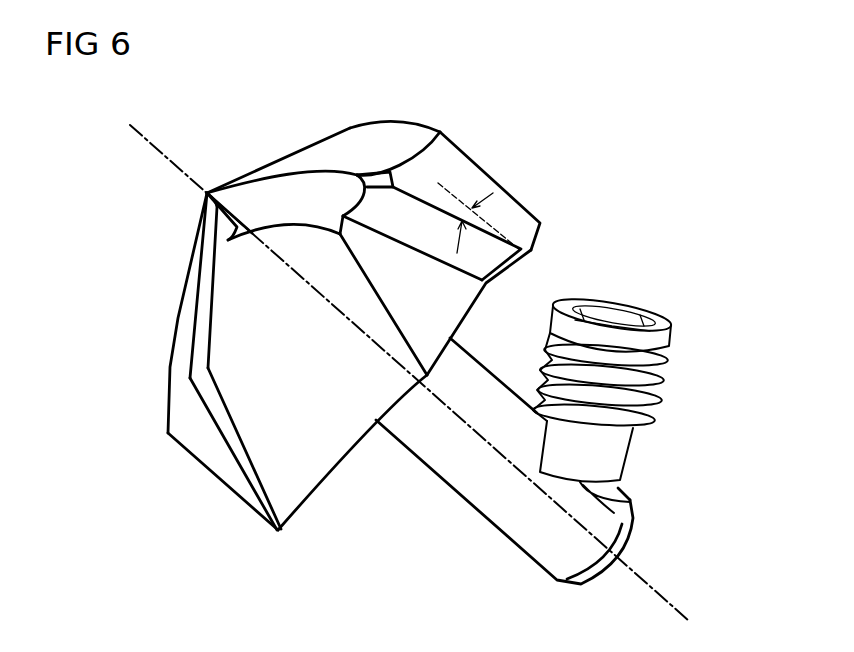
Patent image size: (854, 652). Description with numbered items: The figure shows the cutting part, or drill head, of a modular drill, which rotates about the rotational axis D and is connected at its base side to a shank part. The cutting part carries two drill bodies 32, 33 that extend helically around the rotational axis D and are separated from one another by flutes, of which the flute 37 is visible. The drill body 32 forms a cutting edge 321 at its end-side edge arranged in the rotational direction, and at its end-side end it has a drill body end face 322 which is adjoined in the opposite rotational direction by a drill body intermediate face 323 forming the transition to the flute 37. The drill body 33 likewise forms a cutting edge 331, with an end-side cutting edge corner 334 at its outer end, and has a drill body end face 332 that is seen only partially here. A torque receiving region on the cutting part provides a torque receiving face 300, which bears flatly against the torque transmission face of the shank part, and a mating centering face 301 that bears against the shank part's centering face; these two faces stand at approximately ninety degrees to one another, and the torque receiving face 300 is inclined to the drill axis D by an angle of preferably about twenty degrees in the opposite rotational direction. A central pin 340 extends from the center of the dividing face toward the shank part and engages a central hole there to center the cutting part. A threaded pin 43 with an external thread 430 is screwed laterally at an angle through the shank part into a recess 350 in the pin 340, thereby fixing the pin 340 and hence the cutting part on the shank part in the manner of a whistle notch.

The cutting edge 321 is at (310, 150).
The drill body end face 322 is at (367, 147).
The drill body intermediate face 323 is at (275, 200).
The mating centering face 301 is at (397, 270).
The torque receiving face 300 is at (470, 170).
The drill body 32 is at (478, 177).
The flute 37 is at (253, 327).
The cutting edge 331 is at (210, 318).
The drill body end face 332 is at (178, 383).
The drill body 33 is at (205, 443).
The end-side cutting edge corner 334 is at (207, 368).
The central pin 340 is at (470, 458).
The external thread 430 is at (657, 323).
The threaded pin 43 is at (607, 453).
The recess 350 is at (615, 512).
The rotational axis D is at (670, 600).